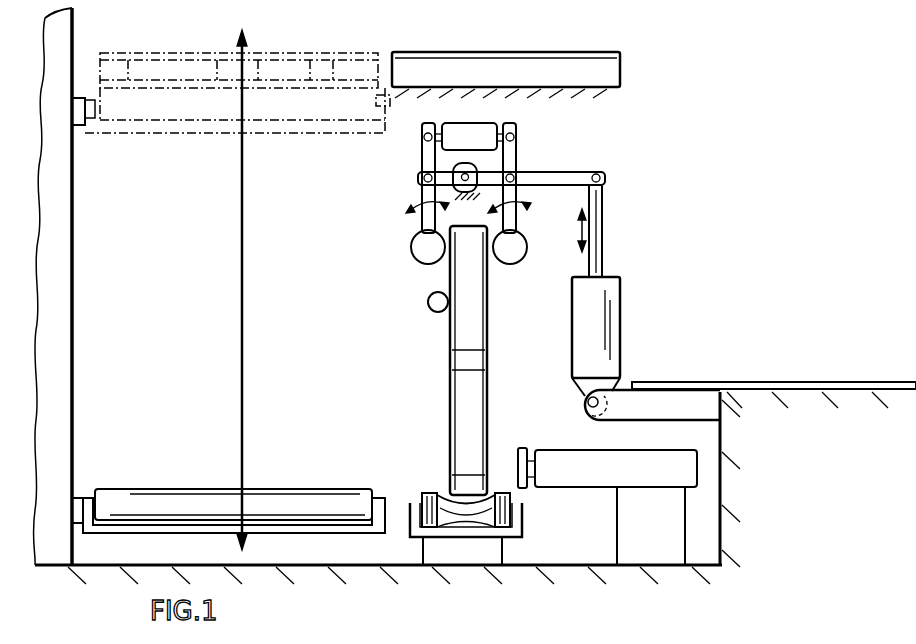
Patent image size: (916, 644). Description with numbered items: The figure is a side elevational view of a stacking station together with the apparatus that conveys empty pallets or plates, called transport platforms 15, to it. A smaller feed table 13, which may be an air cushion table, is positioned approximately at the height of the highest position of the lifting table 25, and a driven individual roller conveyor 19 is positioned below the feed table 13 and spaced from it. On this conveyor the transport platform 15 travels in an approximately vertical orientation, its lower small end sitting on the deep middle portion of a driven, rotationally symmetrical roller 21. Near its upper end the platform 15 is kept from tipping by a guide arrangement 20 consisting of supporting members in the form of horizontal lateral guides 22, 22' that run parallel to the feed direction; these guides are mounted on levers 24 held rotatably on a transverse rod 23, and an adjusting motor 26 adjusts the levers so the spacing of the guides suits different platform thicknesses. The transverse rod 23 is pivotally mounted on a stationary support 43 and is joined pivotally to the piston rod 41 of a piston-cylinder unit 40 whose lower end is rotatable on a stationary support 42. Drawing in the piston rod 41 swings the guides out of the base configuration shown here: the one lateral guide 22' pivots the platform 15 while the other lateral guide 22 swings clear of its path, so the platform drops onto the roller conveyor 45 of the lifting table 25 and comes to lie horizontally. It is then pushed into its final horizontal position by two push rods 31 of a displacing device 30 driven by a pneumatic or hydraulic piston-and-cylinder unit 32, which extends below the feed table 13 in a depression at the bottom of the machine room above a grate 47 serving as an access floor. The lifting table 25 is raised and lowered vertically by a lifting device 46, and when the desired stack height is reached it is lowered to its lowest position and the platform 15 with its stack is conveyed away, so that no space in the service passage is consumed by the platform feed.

The feed table 13 is at (608, 78).
The transport platform 15 is at (178, 60).
The individual roller conveyor 19 is at (465, 548).
The gripper 20 is at (402, 232).
The roller 21 is at (440, 500).
The lateral guide 22 is at (409, 274).
The lateral guide 22' is at (519, 274).
The transverse rod 23 is at (581, 175).
The lever 24 is at (418, 158).
The lifting table 25 is at (340, 147).
The adjusting motor 26 is at (487, 133).
The displacing device 30 is at (563, 430).
The push rod 31 is at (527, 490).
The piston-and-cylinder unit 32 is at (631, 477).
The piston-cylinder unit 40 is at (606, 340).
The piston rod 41 is at (606, 236).
The stationary support 42 is at (603, 404).
The stationary support 43 is at (455, 186).
The roller conveyor 45 is at (175, 498).
The lifting device 46 is at (62, 232).
The grate 47 is at (712, 382).